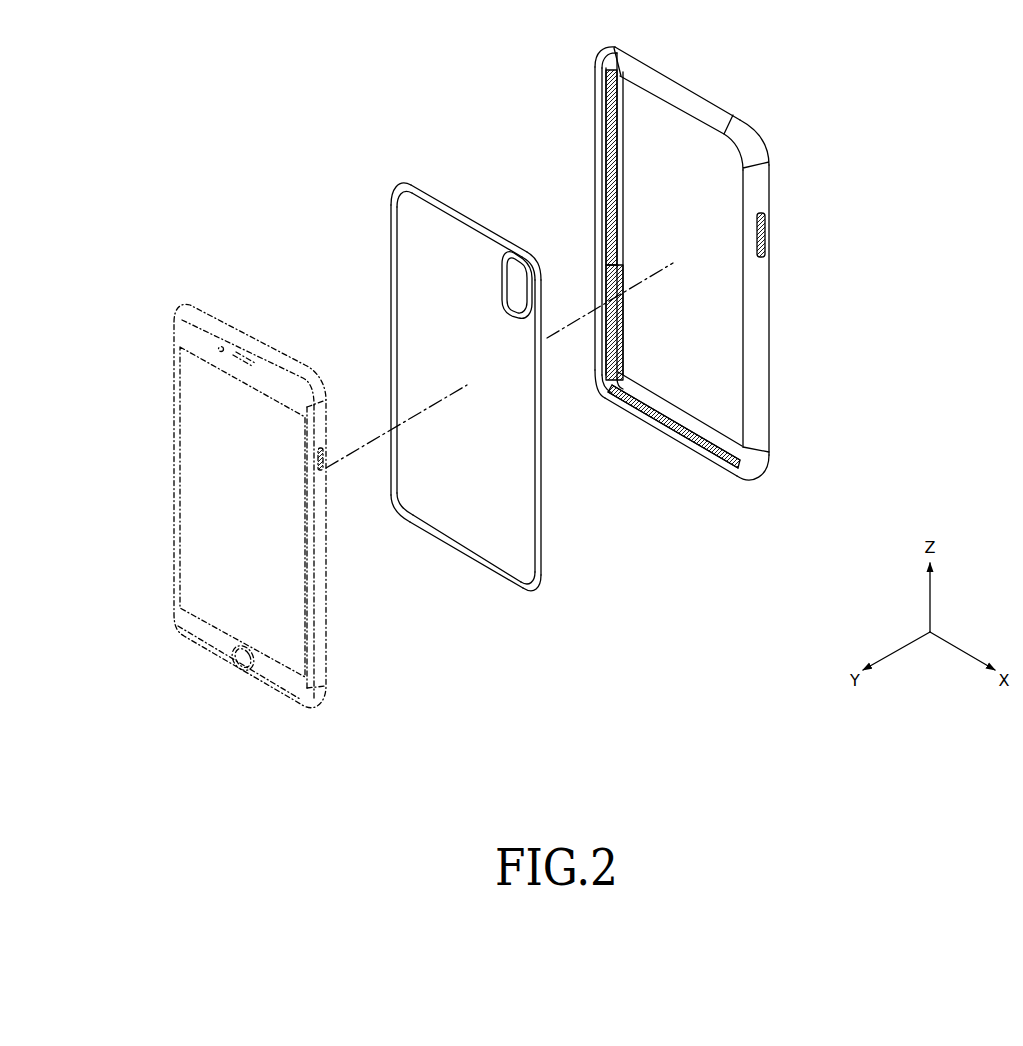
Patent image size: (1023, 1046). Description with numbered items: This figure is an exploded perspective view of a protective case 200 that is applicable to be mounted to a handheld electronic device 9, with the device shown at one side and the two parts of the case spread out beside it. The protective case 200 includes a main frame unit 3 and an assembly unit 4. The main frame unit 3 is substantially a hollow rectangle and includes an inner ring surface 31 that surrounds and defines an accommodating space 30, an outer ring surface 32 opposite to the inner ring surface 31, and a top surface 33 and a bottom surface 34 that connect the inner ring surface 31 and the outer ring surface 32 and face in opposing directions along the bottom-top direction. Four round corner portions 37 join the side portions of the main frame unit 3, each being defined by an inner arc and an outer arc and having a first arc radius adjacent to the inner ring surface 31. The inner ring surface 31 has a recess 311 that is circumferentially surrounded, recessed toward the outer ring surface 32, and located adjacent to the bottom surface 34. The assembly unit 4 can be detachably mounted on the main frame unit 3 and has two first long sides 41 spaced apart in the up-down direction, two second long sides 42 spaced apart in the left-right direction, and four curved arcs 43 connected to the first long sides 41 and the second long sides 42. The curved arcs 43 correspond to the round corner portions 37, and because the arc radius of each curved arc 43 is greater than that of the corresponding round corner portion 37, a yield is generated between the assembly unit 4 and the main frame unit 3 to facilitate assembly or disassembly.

The handheld electronic device 9 is at (170, 455).
The protective case 200 is at (511, 78).
The assembly unit 4 is at (451, 190).
The first long sides 41 is at (481, 222).
The second long sides 42 is at (391, 323).
The curved arcs 43 is at (399, 186).
The main frame unit 3 is at (590, 127).
The accommodating space 30 is at (700, 390).
The inner ring surface 31 is at (614, 278).
The recess 311 is at (624, 374).
The outer ring surface 32 is at (756, 338).
The top surface 33 is at (680, 108).
The bottom surface 34 is at (691, 82).
The round corner portions 37 is at (603, 54).